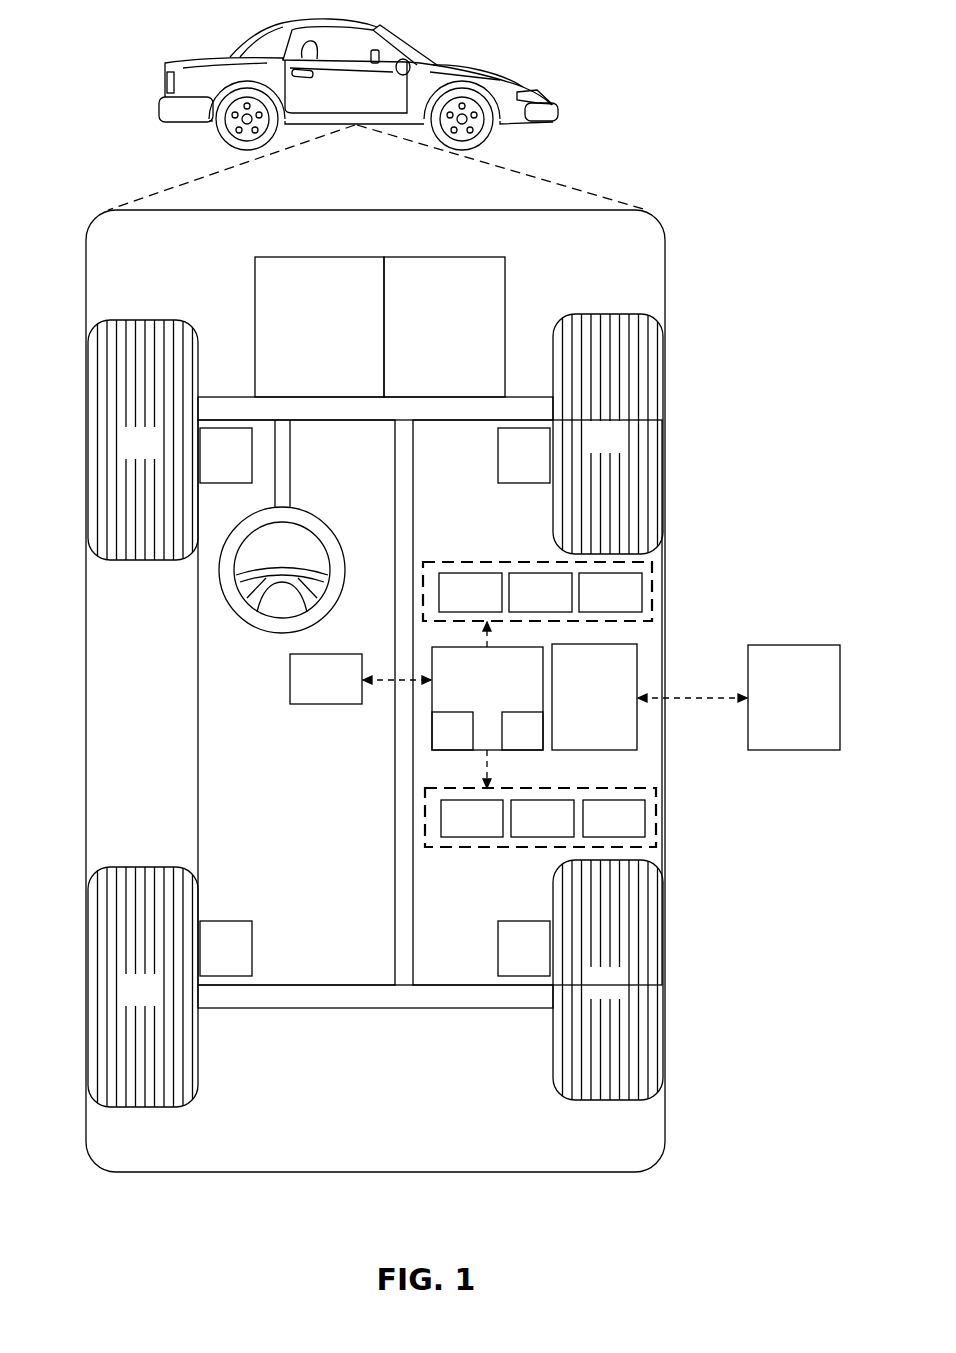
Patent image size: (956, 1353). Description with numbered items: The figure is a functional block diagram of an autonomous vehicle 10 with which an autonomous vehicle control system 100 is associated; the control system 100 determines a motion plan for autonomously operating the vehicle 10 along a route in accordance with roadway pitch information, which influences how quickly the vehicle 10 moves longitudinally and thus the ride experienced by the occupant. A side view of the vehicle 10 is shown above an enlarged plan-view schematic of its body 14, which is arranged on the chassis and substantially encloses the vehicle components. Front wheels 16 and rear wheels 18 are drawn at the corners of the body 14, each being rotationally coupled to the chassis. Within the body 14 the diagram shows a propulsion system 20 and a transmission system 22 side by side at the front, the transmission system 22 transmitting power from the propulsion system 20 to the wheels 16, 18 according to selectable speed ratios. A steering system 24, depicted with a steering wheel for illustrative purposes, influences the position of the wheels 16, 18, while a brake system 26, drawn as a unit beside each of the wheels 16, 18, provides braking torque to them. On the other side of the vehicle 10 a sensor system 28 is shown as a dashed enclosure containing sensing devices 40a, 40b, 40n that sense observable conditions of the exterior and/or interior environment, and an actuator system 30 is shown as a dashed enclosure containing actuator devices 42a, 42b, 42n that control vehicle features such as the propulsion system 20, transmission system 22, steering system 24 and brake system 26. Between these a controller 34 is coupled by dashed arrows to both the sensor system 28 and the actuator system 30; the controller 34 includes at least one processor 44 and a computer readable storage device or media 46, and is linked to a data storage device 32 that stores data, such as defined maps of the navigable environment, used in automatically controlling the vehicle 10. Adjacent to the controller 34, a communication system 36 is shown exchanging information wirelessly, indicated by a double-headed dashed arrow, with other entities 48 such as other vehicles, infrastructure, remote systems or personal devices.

The vehicle 10 is at (163, 90).
The body 14 is at (85, 692).
The front wheels 16 is at (127, 453).
The rear wheels 18 is at (127, 1000).
The propulsion system 20 is at (304, 340).
The transmission system 22 is at (429, 340).
The steering system 24 is at (320, 449).
The brake system 26 is at (210, 468).
The sensor system 28 is at (480, 562).
The actuator system 30 is at (478, 848).
The data storage device 32 is at (310, 692).
The controller 34 is at (472, 689).
The communication system 36 is at (579, 710).
The sensing device 40a is at (447, 606).
The sensing device 40b is at (517, 606).
The sensing device 40n is at (587, 606).
The actuator device 42a is at (448, 832).
The actuator device 42b is at (519, 832).
The actuator device 42n is at (590, 832).
The processor 44 is at (438, 744).
The computer readable storage device or media 46 is at (508, 744).
The other entities 48 is at (778, 710).
The autonomous vehicle control system 100 is at (703, 199).